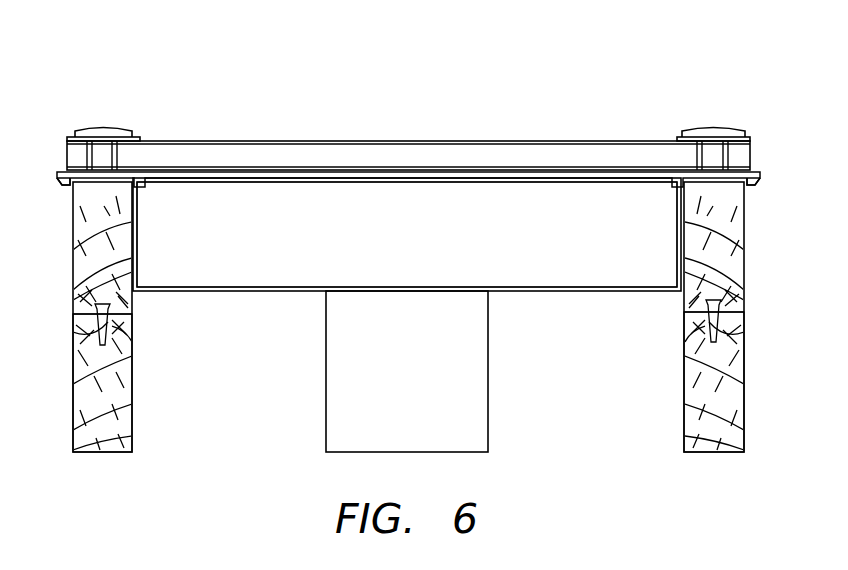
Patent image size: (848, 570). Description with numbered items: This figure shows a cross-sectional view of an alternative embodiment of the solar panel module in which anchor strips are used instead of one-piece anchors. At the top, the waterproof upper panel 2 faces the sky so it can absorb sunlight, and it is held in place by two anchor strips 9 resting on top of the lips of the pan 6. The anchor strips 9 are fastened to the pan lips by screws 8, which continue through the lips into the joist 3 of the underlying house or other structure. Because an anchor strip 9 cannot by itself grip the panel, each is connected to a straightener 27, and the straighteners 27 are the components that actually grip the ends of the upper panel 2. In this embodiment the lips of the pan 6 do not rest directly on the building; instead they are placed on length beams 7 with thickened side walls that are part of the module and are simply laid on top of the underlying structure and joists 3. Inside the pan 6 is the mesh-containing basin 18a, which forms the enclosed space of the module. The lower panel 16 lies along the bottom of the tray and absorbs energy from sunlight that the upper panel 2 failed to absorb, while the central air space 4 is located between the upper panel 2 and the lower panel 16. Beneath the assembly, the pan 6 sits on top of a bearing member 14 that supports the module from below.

The upper panel 2 is at (450, 141).
The joist 3 is at (76, 408).
The central air space 4 is at (300, 200).
The pan 6 is at (207, 166).
The length beam 7 is at (73, 250).
The screw 8 is at (110, 330).
The anchor strip 9 is at (101, 128).
The bearing member 14 is at (488, 365).
The lower panel 16 is at (514, 287).
The mesh-containing basin 18a is at (138, 232).
The straightener 27 is at (760, 178).